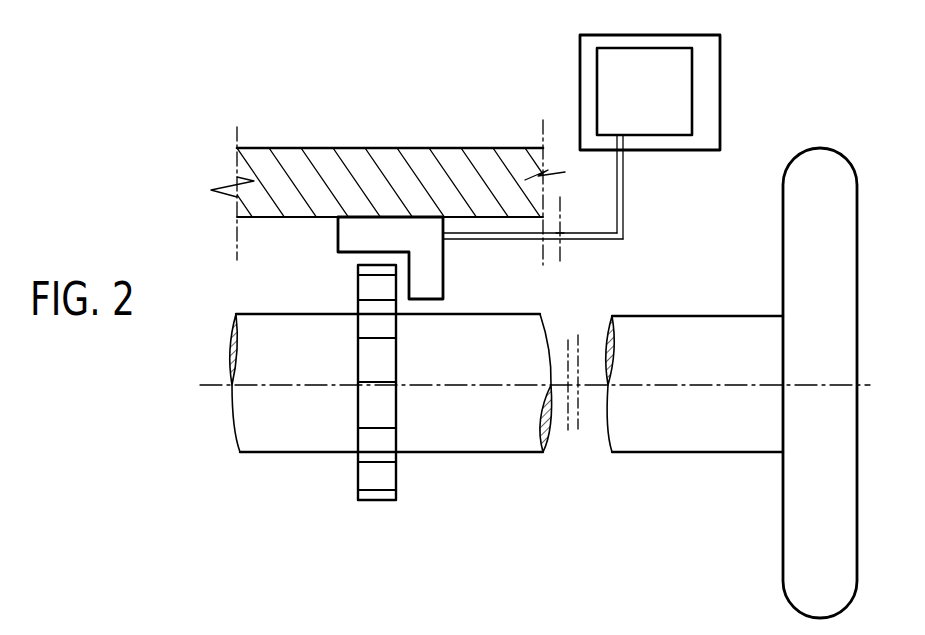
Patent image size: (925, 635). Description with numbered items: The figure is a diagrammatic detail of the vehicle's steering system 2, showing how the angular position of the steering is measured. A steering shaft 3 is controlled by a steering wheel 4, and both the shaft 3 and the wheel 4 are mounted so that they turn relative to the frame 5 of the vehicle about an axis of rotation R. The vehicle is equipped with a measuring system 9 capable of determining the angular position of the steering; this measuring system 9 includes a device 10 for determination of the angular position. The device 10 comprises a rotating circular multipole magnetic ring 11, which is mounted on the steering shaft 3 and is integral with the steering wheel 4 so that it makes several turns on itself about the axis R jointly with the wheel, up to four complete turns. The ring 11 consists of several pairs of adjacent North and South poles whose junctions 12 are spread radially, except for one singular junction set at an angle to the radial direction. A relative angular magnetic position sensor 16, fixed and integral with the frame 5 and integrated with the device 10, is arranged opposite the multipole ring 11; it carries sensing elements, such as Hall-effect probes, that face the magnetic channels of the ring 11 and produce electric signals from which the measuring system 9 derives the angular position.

The steering system 2 is at (176, 379).
The steering shaft 3 is at (248, 453).
The steering wheel 4 is at (857, 500).
The frame 5 is at (285, 148).
The measuring system 9 is at (708, 35).
The device for determination of the angular position 10 is at (692, 83).
The multipole magnetic ring 11 is at (358, 478).
The junctions 12 is at (385, 427).
The relative angular magnetic position sensor 16 is at (443, 283).
The axis of rotation R is at (313, 382).